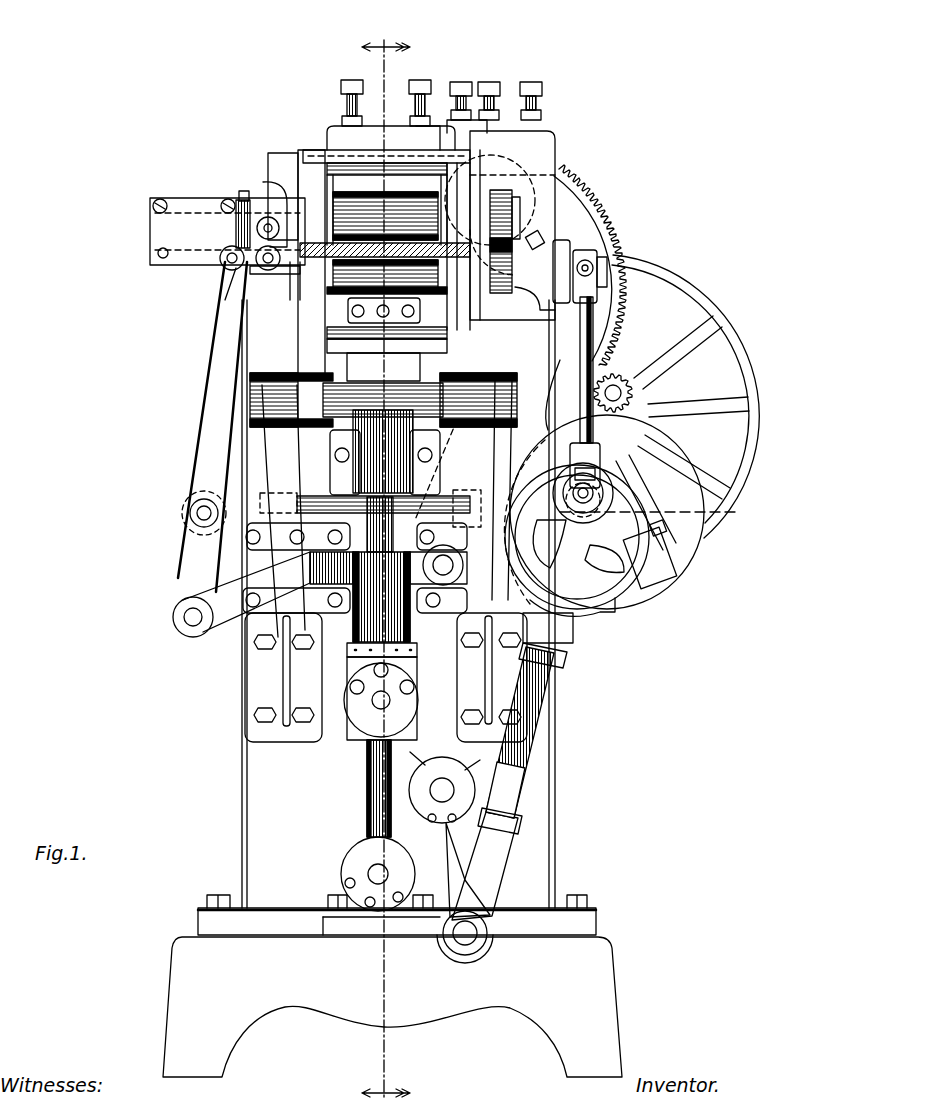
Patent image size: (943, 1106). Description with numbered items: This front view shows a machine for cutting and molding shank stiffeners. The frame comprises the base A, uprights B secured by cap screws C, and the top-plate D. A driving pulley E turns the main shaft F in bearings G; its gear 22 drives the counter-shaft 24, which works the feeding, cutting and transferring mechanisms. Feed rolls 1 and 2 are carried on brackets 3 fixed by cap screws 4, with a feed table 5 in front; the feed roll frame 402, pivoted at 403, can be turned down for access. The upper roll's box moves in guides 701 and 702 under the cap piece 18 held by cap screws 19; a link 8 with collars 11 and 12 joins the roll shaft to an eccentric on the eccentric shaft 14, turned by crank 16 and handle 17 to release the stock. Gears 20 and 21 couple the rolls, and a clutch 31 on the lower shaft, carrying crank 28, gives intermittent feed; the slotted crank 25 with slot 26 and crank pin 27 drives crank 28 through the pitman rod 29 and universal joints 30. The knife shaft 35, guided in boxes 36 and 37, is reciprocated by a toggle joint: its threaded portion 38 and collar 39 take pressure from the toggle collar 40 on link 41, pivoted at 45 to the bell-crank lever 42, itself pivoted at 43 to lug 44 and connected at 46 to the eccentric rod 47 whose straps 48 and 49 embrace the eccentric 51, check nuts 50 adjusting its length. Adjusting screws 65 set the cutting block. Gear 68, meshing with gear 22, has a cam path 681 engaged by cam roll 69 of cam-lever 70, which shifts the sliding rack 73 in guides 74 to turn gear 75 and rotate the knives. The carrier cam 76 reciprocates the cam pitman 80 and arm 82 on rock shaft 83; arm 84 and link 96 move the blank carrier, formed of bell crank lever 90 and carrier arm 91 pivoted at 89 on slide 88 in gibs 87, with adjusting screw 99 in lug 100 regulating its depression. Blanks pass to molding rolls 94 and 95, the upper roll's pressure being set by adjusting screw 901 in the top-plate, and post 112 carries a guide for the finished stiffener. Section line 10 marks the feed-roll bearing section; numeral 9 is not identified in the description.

The upper feed roll 1 is at (349, 169).
The lower feed roll 2 is at (325, 308).
The brackets or arms 3 is at (272, 440).
The cap screws 4 is at (568, 740).
The feed table 5 is at (332, 273).
The link 8 is at (283, 195).
The bolt 9 is at (478, 176).
The section line 10 is at (463, 82).
The collar 11 is at (287, 163).
The lower collar 12 is at (265, 211).
The eccentric shaft 14 is at (361, 165).
The crank 16 is at (488, 166).
The handle 17 is at (538, 118).
The cap piece 18 is at (383, 146).
The cap screws 19 is at (315, 135).
The gear 20 is at (522, 233).
The gear 21 is at (588, 244).
The gear 22 is at (632, 395).
The counter-shaft 24 is at (661, 515).
The adjustable slotted crank 25 is at (612, 494).
The slot 26 is at (598, 523).
The crank pin 27 is at (605, 464).
The crank 28 is at (572, 266).
The pitman rod 29 is at (600, 310).
The universal joint 30 is at (622, 286).
The clutch 31 is at (600, 260).
The knife shaft 35 is at (376, 766).
The box 36 is at (341, 901).
The box 37 is at (357, 482).
The screw-threaded portion 38 is at (367, 644).
The internally threaded collar 39 is at (415, 640).
The toggle-joint collar 40 is at (351, 674).
The link 41 is at (421, 740).
The bell-crank lever 42 is at (427, 843).
The pivot 43 is at (355, 875).
The lug 44 is at (430, 907).
The pivotal connection 45 is at (500, 793).
The pivotal connection 46 is at (471, 946).
The eccentric rod 47 is at (521, 765).
The eccentric strap 48 is at (665, 576).
The eccentric strap 49 is at (625, 600).
The check nuts 50 is at (562, 660).
The eccentric 51 is at (634, 578).
The adjusting screws 65 is at (355, 72).
The gear 68 is at (582, 255).
The cam roll 69 is at (566, 373).
The cam-lever 70 is at (458, 486).
The sliding rack 73 is at (298, 565).
The guides 74 is at (295, 613).
The gear 75 is at (304, 572).
The carrier-cam 76 is at (713, 486).
The cam pitman 80 is at (311, 510).
The arm 82 is at (192, 525).
The rock shaft 83 is at (184, 625).
The arm 84 is at (214, 437).
The gibs 87 is at (150, 243).
The slide or block 88 is at (236, 231).
The pivot 89 is at (228, 261).
The bell crank lever 90 is at (304, 275).
The carrier arm 91 is at (428, 134).
The upper molding roll 94 is at (521, 222).
The lower mold roll 95 is at (509, 333).
The link 96 is at (262, 262).
The adjusting screw 99 is at (281, 210).
The lug 100 is at (242, 228).
The post 112 is at (540, 248).
The feed roll frame 402 is at (290, 344).
The pivot 403 is at (240, 400).
The cam path 681 is at (592, 268).
The guide 701 is at (319, 188).
The guide 702 is at (500, 173).
The adjusting screw 901 is at (495, 76).
The base A is at (162, 982).
The uprights B is at (232, 812).
The cap screws C is at (205, 899).
The top-plate D is at (552, 141).
The driving pulley E is at (730, 310).
The main or driving shaft F is at (614, 397).
The bearings G is at (619, 385).